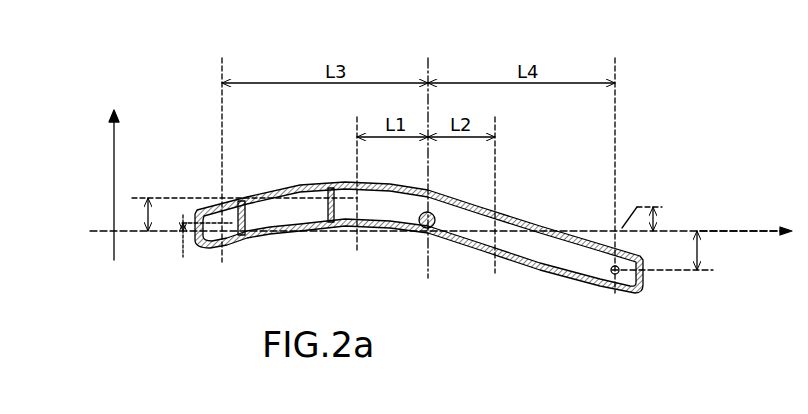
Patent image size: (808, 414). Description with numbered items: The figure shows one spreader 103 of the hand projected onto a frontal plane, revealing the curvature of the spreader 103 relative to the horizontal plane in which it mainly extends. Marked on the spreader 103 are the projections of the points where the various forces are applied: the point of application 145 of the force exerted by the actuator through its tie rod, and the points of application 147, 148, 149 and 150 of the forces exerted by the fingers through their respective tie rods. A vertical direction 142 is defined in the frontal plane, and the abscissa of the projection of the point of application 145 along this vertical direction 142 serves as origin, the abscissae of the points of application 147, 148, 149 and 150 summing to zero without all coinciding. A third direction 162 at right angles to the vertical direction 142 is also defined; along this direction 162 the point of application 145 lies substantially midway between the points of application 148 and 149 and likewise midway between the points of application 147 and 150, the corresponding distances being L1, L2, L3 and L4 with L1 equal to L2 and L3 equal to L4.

The spreader 103 is at (563, 260).
The vertical direction 142 is at (116, 165).
The point of application of the force exerted by the actuator 145 is at (424, 228).
The point of application of the force exerted by the tie rod 147 is at (219, 223).
The point of application of the force exerted by the tie rod 148 is at (356, 200).
The point of application of the force exerted by the tie rod 149 is at (538, 205).
The point of application of the force exerted by the tie rod 150 is at (616, 274).
The third direction 162 is at (708, 228).